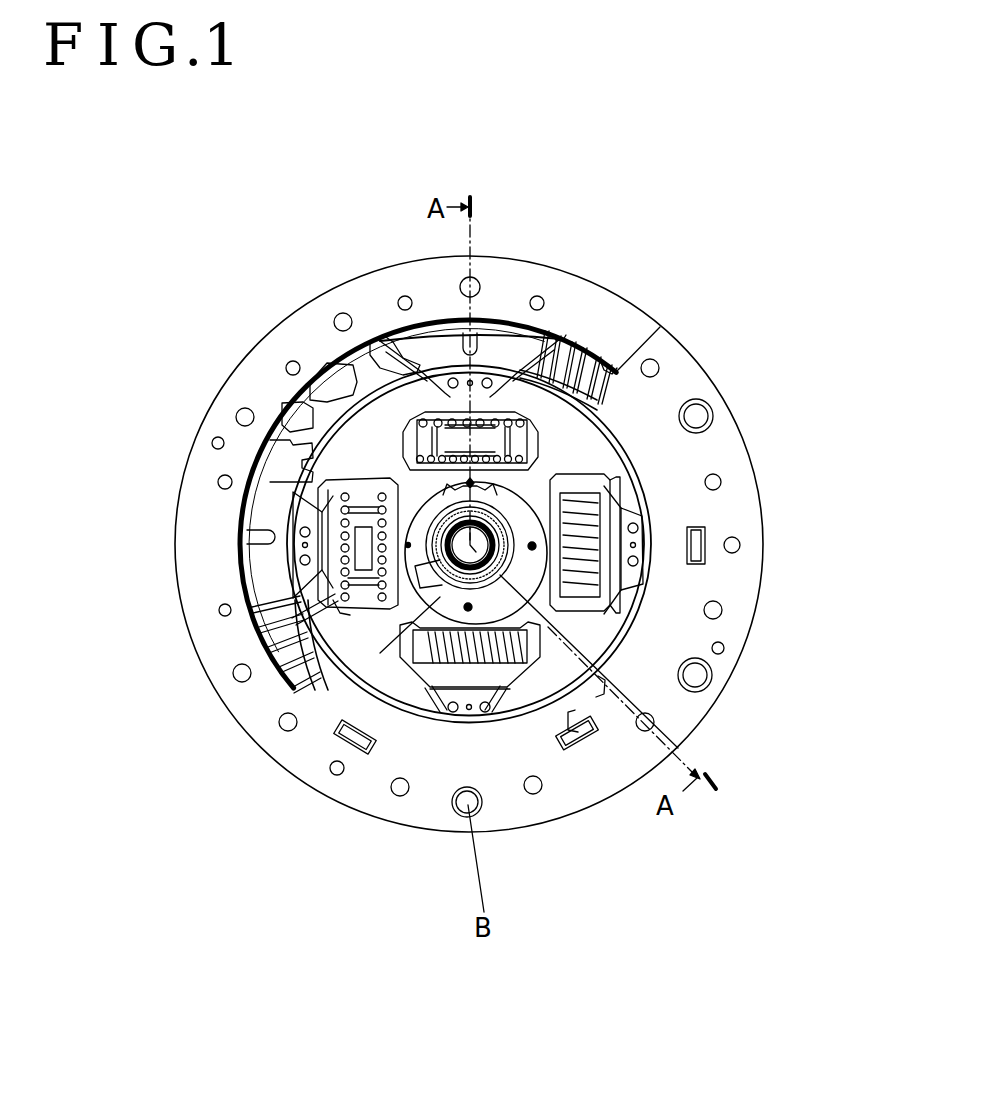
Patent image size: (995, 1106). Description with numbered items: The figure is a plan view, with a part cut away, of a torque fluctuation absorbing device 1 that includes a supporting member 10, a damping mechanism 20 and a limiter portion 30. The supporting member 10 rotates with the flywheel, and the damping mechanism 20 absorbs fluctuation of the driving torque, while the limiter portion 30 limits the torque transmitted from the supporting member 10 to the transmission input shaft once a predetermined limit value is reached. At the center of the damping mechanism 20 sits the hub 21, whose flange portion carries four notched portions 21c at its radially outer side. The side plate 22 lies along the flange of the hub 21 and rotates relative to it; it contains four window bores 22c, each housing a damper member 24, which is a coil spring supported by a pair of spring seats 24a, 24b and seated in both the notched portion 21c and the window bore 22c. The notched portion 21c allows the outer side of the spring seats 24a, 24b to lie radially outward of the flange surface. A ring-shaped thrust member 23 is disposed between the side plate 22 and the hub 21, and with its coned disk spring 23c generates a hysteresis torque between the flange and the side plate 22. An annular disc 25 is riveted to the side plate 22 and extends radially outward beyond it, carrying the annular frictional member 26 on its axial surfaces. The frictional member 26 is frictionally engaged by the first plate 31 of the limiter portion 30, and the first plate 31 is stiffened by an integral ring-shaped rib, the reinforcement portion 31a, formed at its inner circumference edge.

The torque fluctuation absorbing device 1 is at (798, 293).
The supporting member 10 is at (587, 298).
The damping mechanism 20 is at (257, 593).
The hub 21 is at (652, 720).
The notched portion 21c is at (497, 408).
The side plate 22 is at (618, 477).
The window bore 22c is at (440, 675).
The thrust member 23 is at (445, 490).
The coned disk spring 23c is at (493, 508).
The damper member 24 is at (382, 342).
The spring seat 24a is at (357, 485).
The spring seat 24b is at (357, 597).
The disc 25 is at (250, 537).
The frictional member 26 is at (337, 612).
The limiter portion 30 is at (760, 598).
The first plate 31 is at (735, 637).
The reinforcement portion 31a is at (650, 523).